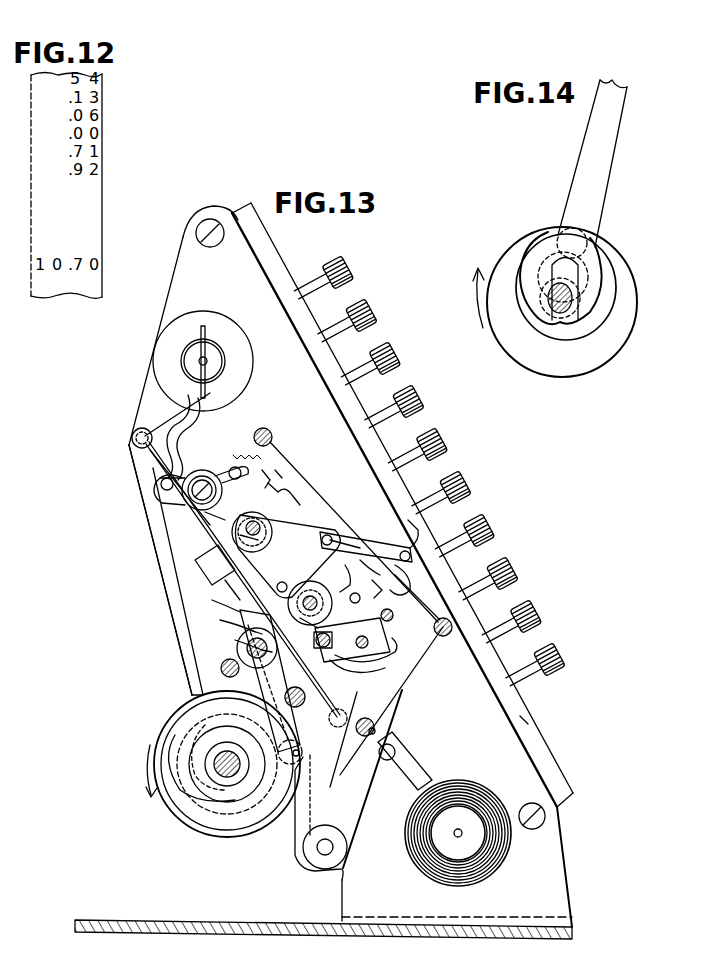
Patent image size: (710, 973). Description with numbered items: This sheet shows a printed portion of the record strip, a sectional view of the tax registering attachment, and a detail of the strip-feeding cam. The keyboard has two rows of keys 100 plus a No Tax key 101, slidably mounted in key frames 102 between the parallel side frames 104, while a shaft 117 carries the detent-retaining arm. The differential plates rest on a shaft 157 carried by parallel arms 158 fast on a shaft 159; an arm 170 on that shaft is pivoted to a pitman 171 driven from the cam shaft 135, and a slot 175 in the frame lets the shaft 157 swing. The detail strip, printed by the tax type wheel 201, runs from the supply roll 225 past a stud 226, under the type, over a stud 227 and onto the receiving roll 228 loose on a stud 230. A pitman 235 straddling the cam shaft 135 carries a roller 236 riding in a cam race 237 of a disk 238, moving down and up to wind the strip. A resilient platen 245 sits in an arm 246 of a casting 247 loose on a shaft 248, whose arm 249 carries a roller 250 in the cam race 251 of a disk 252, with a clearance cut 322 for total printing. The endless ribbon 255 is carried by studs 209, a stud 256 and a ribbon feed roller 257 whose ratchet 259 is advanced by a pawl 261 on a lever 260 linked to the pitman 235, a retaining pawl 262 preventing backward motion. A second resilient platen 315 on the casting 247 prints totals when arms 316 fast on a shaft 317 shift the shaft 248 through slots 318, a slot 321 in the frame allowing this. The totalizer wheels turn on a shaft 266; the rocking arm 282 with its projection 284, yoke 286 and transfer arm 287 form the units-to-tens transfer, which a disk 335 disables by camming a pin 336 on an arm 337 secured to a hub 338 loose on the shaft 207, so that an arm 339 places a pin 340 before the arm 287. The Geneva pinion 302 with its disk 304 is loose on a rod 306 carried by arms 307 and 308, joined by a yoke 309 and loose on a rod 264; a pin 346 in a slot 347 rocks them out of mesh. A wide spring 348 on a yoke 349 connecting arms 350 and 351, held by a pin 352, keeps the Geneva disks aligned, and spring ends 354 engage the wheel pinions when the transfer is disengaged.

In FIG. 13, the keys 100 is at (540, 627).
In FIG. 13, the No Tax key 101 is at (346, 277).
In FIG. 13, the key frames 102 is at (525, 720).
In FIG. 13, the side frames 104 is at (553, 852).
In FIG. 13, the shaft 117 is at (306, 697).
In FIG. 14, the cam shaft 135 is at (560, 310).
In FIG. 13, the cam shaft 135 is at (222, 775).
In FIG. 13, the shaft 157 is at (380, 750).
In FIG. 13, the parallel arms 158 is at (372, 822).
In FIG. 13, the shaft 159 is at (322, 848).
In FIG. 13, the arm 170 is at (300, 820).
In FIG. 13, the pitman 171 is at (332, 780).
In FIG. 13, the slot 175 is at (420, 782).
In FIG. 13, the tax type wheel 201 is at (207, 525).
In FIG. 13, the shaft 207 is at (254, 520).
In FIG. 13, the studs 209 is at (263, 432).
In FIG. 13, the supply roll 225 is at (488, 862).
In FIG. 13, the stud 226 is at (367, 717).
In FIG. 13, the stud 227 is at (133, 438).
In FIG. 13, the receiving roll 228 is at (195, 364).
In FIG. 13, the stud 230 is at (204, 360).
In FIG. 14, the pitman 235 is at (595, 185).
In FIG. 13, the pitman 235 is at (170, 552).
In FIG. 14, the antifriction roller 236 is at (585, 250).
In FIG. 13, the antifriction roller 236 is at (200, 690).
In FIG. 14, the cam race 237 is at (617, 280).
In FIG. 14, the disk 238 is at (625, 317).
In FIG. 13, the resilient platen 245 is at (200, 562).
In FIG. 13, the arm 246 is at (215, 605).
In FIG. 13, the casting 247 is at (245, 645).
In FIG. 13, the shaft 248 is at (265, 650).
In FIG. 13, the arm 249 is at (329, 716).
In FIG. 13, the anti-friction roller 250 is at (268, 792).
In FIG. 13, the cam race 251 is at (182, 730).
In FIG. 13, the disk 252 is at (178, 805).
In FIG. 13, the endless ribbon 255 is at (277, 475).
In FIG. 13, the stud 256 is at (376, 729).
In FIG. 13, the ribbon feed roller 257 is at (160, 478).
In FIG. 13, the ratchet 259 is at (196, 478).
In FIG. 13, the lever 260 is at (158, 490).
In FIG. 13, the spring-pressed pawl 261 is at (208, 470).
In FIG. 13, the retaining pawl 262 is at (220, 518).
In FIG. 13, the rod 264 is at (398, 652).
In FIG. 13, the shaft 266 is at (355, 592).
In FIG. 13, the rocking arm 282 is at (288, 520).
In FIG. 13, the projection 284 is at (328, 533).
In FIG. 13, the yoke 286 is at (352, 545).
In FIG. 13, the arm 287 is at (395, 552).
In FIG. 13, the pinion 302 is at (402, 572).
In FIG. 13, the disk 304 is at (378, 560).
In FIG. 13, the rod 306 is at (352, 572).
In FIG. 13, the arm 307 is at (404, 554).
In FIG. 13, the arm 308 is at (376, 586).
In FIG. 13, the yoke 309 is at (375, 668).
In FIG. 13, the resilient platen 315 is at (255, 590).
In FIG. 13, the arms 316 is at (225, 625).
In FIG. 13, the shaft 317 is at (220, 668).
In FIG. 13, the slots 318 is at (250, 632).
In FIG. 13, the slot 321 is at (262, 660).
In FIG. 13, the clearance cut 322 is at (299, 751).
In FIG. 13, the disk 335 is at (410, 540).
In FIG. 13, the pin 336 is at (238, 584).
In FIG. 13, the arm 337 is at (215, 580).
In FIG. 13, the hub 338 is at (255, 538).
In FIG. 13, the arm 339 is at (276, 469).
In FIG. 13, the pin 340 is at (280, 490).
In FIG. 13, the pin 346 is at (370, 641).
In FIG. 13, the slot 347 is at (393, 614).
In FIG. 13, the wide spring 348 is at (440, 565).
In FIG. 13, the yoke 349 is at (420, 660).
In FIG. 13, the arm 350 is at (330, 606).
In FIG. 13, the arm 351 is at (315, 630).
In FIG. 13, the pin 352 is at (323, 648).
In FIG. 13, the spring ends 354 is at (268, 652).